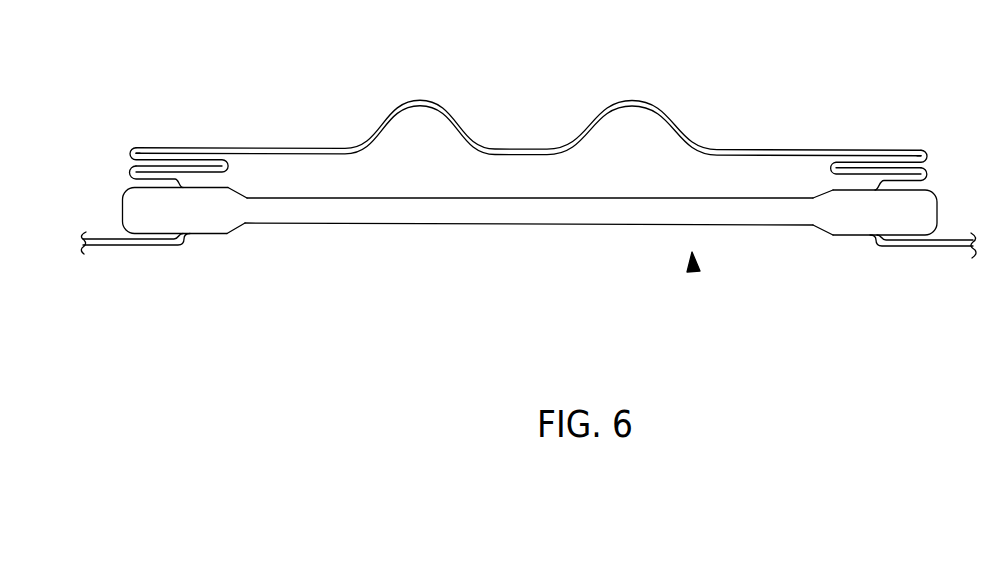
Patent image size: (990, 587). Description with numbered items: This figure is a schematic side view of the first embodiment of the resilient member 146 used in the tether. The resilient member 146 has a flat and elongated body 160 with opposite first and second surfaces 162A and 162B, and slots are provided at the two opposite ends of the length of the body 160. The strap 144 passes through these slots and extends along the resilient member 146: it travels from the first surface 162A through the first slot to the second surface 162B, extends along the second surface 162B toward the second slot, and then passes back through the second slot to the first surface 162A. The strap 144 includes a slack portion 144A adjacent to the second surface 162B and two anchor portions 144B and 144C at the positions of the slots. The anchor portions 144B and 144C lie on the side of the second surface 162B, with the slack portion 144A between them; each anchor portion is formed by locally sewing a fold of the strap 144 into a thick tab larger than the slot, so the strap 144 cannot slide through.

The strap 144 is at (125, 248).
The slack portion 144A is at (488, 141).
The anchor portion 144B is at (158, 150).
The anchor portion 144C is at (908, 151).
The resilient member 146 is at (697, 274).
The body 160 is at (505, 213).
The first surface 162A is at (357, 226).
The second surface 162B is at (415, 198).